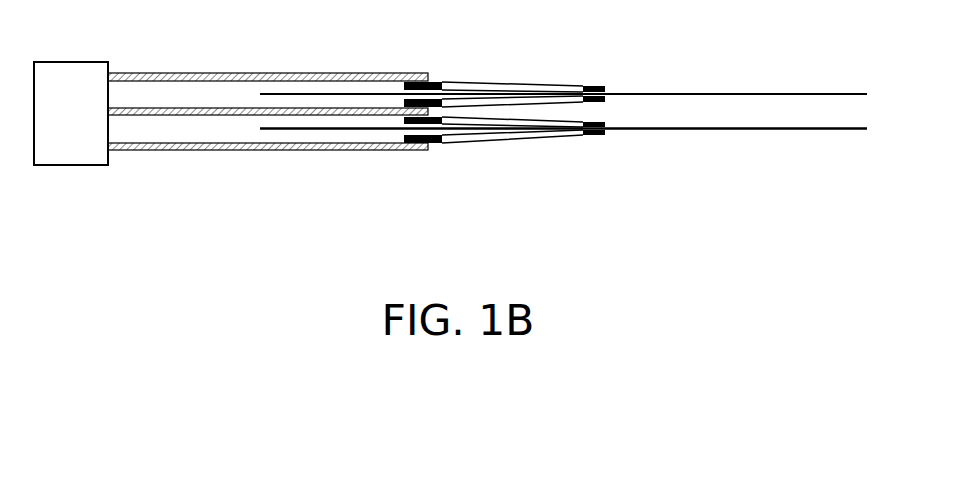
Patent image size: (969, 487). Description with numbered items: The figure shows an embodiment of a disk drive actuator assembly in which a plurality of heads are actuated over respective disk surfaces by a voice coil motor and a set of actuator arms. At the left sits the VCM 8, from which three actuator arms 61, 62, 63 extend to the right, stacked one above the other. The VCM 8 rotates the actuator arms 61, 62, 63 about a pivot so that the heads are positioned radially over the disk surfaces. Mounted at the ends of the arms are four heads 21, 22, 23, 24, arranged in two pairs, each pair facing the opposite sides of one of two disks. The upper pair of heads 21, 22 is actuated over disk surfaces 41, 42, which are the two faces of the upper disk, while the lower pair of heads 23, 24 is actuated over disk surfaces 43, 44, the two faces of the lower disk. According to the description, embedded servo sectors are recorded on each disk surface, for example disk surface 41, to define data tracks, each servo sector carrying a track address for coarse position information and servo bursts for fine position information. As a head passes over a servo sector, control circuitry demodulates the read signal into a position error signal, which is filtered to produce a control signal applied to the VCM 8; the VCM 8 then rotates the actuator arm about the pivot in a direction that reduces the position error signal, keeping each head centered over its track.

The VCM 8 is at (70, 62).
The actuator arm 61 is at (163, 73).
The actuator arm 62 is at (205, 108).
The actuator arm 63 is at (243, 143).
The head 21 is at (590, 86).
The head 22 is at (586, 97).
The head 23 is at (585, 128).
The head 24 is at (596, 136).
The disk surface 41 is at (753, 94).
The disk surface 42 is at (793, 94).
The disk surface 43 is at (798, 128).
The disk surface 44 is at (803, 129).